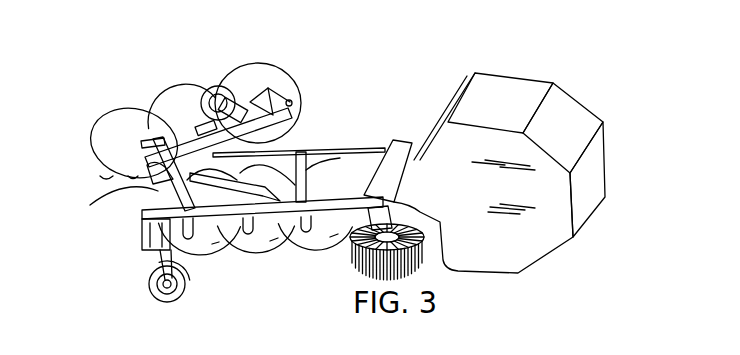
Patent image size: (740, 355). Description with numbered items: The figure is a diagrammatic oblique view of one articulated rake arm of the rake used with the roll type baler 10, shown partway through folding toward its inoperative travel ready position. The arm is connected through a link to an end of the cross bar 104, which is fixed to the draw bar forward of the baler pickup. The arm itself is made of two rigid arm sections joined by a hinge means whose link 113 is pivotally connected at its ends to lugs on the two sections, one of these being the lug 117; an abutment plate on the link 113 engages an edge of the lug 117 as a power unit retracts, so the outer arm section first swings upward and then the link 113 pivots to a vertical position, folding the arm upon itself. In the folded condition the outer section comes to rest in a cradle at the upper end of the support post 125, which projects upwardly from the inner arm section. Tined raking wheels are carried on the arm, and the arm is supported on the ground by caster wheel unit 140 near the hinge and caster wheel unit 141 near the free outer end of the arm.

The roll type baler 10 is at (368, 166).
The cross bar 104 is at (393, 139).
The link 113 is at (140, 193).
The lug 117 is at (133, 188).
The support post 125 is at (318, 154).
The caster wheel unit 140 is at (187, 287).
The caster wheel unit 141 is at (248, 77).